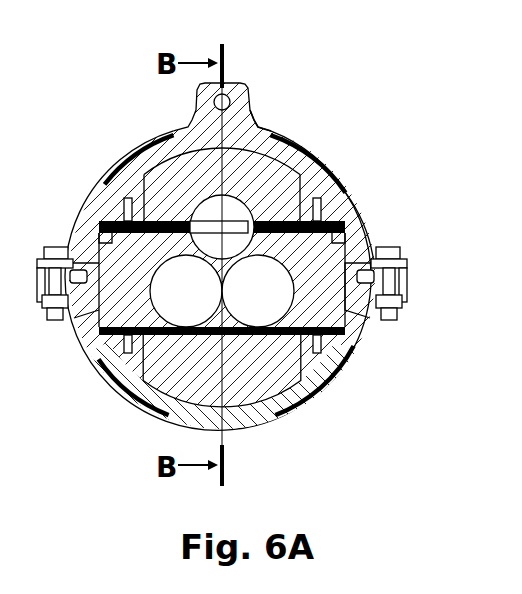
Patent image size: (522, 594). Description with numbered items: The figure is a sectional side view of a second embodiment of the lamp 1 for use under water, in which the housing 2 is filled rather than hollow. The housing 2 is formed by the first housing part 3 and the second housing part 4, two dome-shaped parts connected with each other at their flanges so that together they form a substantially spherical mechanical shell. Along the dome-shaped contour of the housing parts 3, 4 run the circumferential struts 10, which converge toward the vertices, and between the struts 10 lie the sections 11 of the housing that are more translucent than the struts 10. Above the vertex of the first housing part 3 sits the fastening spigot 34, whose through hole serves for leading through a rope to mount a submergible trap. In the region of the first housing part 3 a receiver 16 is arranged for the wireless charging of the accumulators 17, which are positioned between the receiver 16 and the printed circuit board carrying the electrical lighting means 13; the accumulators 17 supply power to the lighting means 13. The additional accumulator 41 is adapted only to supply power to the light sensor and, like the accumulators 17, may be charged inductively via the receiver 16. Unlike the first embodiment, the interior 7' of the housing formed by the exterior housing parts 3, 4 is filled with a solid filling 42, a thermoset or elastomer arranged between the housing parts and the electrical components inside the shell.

The lamp 1 is at (92, 117).
The housing 2 is at (363, 223).
The first housing part 3 is at (107, 203).
The second housing part 4 is at (330, 360).
The interior 7' is at (299, 79).
The circumferential struts 10 is at (282, 140).
The sections 11 is at (152, 153).
The electrical lighting means 13 is at (150, 405).
The receiver 16 is at (325, 212).
The accumulators 17 is at (255, 292).
The fastening spigot 34 is at (245, 85).
The additional accumulator 41 is at (320, 157).
The solid filling 42 is at (327, 267).